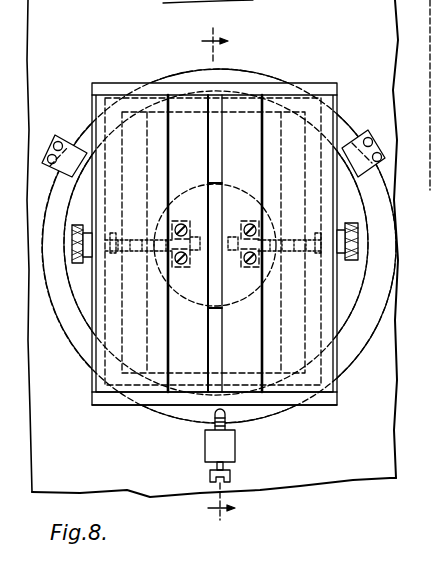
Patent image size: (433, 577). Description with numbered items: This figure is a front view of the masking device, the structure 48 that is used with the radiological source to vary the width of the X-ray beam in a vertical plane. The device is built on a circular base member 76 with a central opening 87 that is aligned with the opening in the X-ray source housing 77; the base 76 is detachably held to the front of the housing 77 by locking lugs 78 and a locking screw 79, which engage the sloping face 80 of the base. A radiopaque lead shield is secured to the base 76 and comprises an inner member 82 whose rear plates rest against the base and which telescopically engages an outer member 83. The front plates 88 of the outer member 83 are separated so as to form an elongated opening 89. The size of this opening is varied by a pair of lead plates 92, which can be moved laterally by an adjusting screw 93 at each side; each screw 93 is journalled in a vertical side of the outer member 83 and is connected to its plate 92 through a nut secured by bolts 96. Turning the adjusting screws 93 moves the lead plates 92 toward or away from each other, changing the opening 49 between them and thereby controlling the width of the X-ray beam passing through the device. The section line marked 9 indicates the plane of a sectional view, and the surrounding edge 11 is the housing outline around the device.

The section line 9- 9 is at (218, 277).
The machine frame 11 is at (399, 240).
The structure for accomplishing variations in the width of the X-ray beam 48 is at (337, 65).
The opening 49 is at (216, 362).
The circular base member 76 is at (90, 328).
The X-ray source housing 77 is at (297, 480).
The locking lugs 78 is at (70, 142).
The locking screw 79 is at (233, 477).
The sloping face 80 is at (248, 406).
The inner member 82 is at (100, 356).
The outer member 83 is at (110, 405).
The central opening 87 is at (215, 308).
The front plates 88 is at (107, 382).
The elongated opening 89 is at (258, 122).
The lead plates 92 is at (204, 92).
The adjusting screw 93 is at (86, 265).
The bolts 96 is at (184, 226).